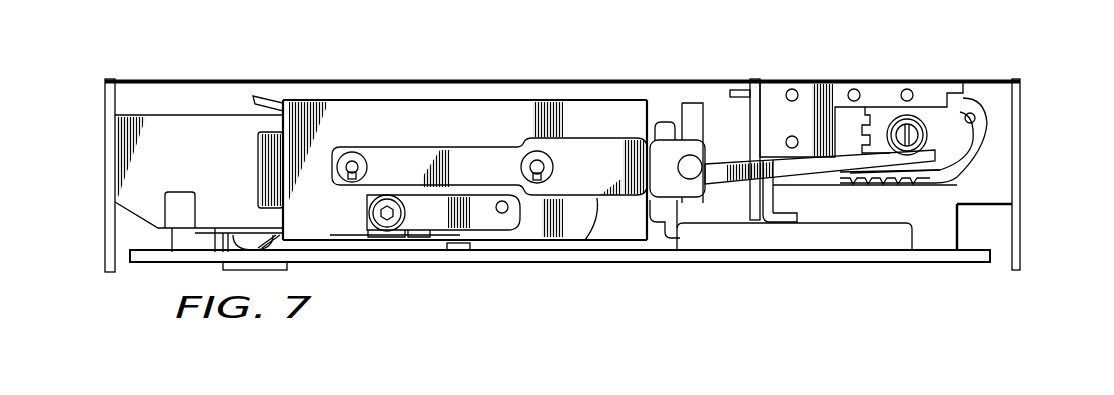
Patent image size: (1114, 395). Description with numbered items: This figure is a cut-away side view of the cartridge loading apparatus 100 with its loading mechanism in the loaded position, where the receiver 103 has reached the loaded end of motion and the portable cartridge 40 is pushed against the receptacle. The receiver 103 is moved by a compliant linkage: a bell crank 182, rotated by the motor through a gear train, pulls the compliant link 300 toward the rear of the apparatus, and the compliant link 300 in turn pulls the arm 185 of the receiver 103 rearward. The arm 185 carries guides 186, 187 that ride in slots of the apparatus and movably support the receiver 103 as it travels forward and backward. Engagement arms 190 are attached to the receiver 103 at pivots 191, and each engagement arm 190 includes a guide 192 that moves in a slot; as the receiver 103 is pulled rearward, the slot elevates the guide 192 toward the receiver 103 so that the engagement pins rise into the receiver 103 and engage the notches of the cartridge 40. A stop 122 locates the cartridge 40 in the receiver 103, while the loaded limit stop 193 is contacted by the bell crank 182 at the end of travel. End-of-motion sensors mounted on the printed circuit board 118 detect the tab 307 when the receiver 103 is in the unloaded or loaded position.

The cartridge loading apparatus 100 is at (582, 66).
The cartridge 40 is at (657, 118).
The guide 186 is at (366, 165).
The guide 187 is at (513, 150).
The guide 192 is at (370, 204).
The engagement arm 190 is at (427, 222).
The tab 307 is at (457, 250).
The pivot 191 is at (503, 214).
The arm 185 is at (594, 232).
The receiver 103 is at (642, 222).
The stop 122 is at (683, 235).
The printed circuit board 118 is at (862, 263).
The compliant link 300 is at (880, 180).
The stop 193 is at (955, 93).
The bell crank 182 is at (988, 104).